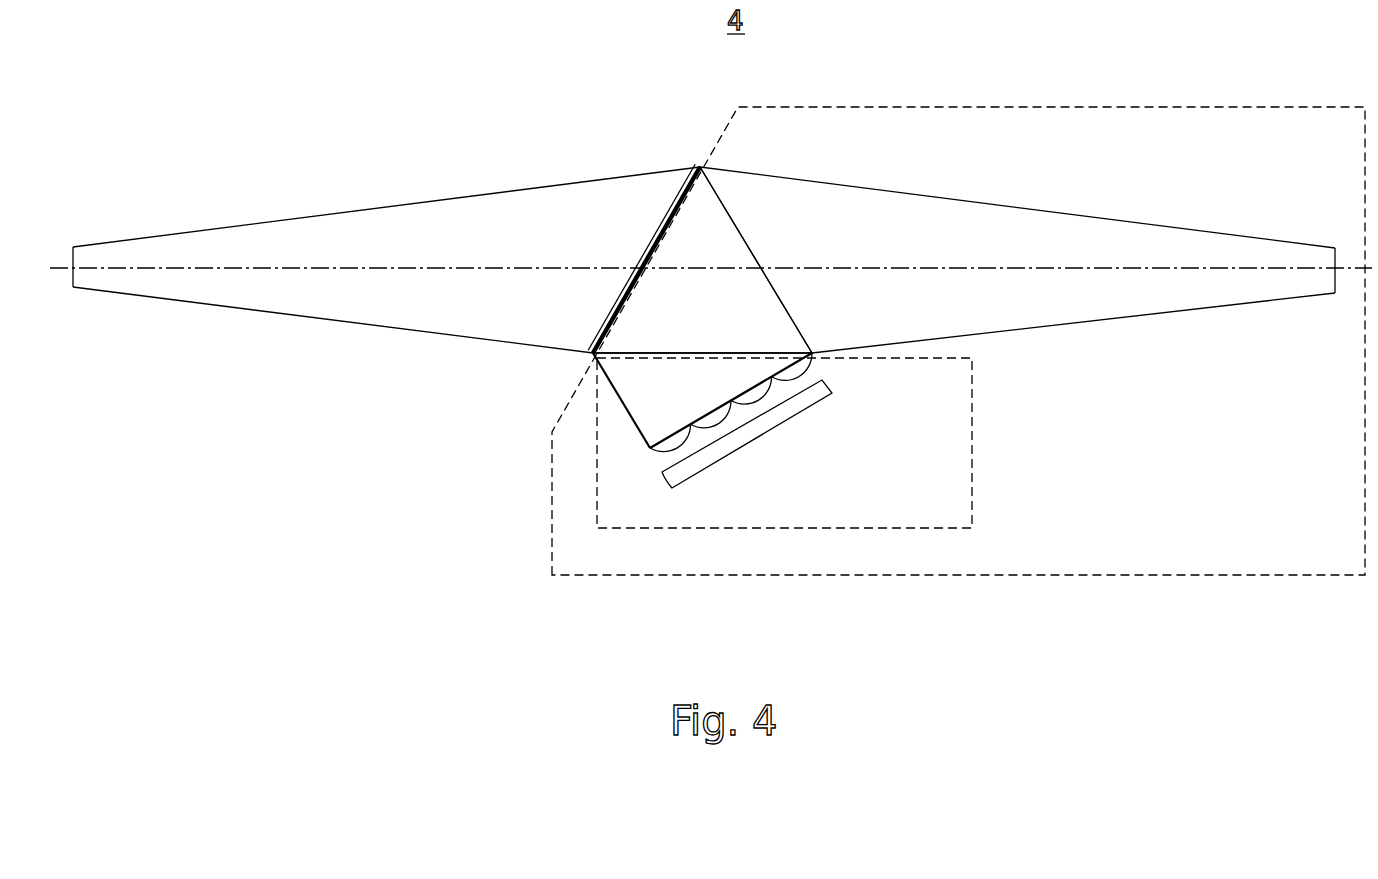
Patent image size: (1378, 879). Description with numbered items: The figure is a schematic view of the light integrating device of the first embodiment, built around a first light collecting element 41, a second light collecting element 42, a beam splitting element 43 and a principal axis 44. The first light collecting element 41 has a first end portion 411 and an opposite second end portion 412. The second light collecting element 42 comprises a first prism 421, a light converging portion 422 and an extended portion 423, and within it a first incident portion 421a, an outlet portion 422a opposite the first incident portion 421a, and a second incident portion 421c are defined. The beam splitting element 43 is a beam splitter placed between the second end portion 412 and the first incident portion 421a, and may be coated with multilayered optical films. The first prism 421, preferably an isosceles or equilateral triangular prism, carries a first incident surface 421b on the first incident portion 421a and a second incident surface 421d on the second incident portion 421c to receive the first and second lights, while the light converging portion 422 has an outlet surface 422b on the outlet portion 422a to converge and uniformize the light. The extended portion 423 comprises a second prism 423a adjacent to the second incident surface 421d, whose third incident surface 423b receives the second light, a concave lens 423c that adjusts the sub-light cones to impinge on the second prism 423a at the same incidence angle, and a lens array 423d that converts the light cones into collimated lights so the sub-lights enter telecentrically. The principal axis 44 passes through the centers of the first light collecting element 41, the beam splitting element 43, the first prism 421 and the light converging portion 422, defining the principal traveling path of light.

The first light collecting element 41 is at (350, 207).
The first end portion 411 is at (103, 286).
The second end portion 412 is at (629, 236).
The second light collecting element 42 is at (1005, 106).
The first prism 421 is at (735, 260).
The first incident portion 421a is at (689, 230).
The first incident surface 421b is at (690, 205).
The second incident portion 421c is at (775, 334).
The second incident surface 421d is at (617, 352).
The light converging portion 422 is at (1050, 205).
The outlet portion 422a is at (1311, 257).
The outlet surface 422b is at (1327, 288).
The extended portion 423 is at (972, 422).
The second prism 423a is at (612, 389).
The third incident surface 423b is at (668, 435).
The concave lens 423c is at (750, 447).
The lens array 423d is at (813, 368).
The beam splitting element 43 is at (684, 196).
The principal axis 44 is at (358, 274).